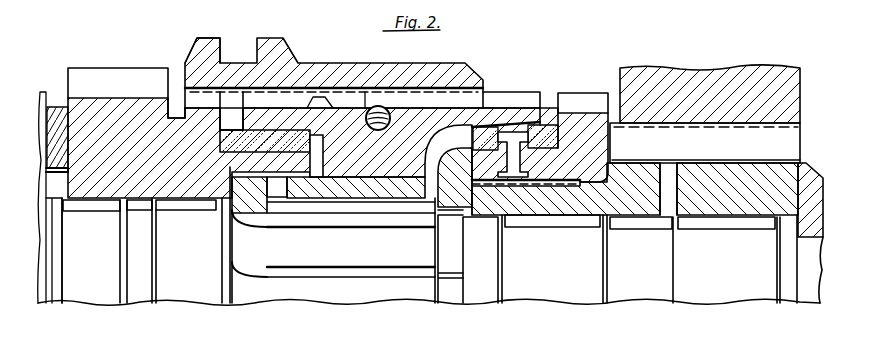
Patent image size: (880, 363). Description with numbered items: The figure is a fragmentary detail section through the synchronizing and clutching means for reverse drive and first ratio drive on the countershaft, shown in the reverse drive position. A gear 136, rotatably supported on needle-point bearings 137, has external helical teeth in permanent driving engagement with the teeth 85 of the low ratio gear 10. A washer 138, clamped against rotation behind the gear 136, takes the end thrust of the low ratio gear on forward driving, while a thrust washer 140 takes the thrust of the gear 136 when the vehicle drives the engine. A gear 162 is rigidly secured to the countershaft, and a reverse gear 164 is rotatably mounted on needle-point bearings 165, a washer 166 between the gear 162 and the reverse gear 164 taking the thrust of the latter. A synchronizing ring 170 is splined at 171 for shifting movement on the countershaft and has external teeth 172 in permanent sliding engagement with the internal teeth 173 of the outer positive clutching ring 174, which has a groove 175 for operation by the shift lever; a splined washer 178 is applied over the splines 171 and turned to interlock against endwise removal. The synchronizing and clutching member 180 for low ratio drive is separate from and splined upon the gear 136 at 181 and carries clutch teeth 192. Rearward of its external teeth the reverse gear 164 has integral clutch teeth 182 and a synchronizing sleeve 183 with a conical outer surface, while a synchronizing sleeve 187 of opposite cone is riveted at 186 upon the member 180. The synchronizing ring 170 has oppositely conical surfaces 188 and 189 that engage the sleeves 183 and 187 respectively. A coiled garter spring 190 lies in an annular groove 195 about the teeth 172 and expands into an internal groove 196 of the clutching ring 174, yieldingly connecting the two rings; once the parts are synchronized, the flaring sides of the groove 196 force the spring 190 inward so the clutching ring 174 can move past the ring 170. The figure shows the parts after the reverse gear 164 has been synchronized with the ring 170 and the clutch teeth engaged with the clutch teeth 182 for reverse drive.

The low ratio gear 10 is at (661, 76).
The teeth 85 is at (700, 140).
The gear 136 is at (742, 204).
The needle-point bearings 137 is at (692, 233).
The washer 138 is at (810, 229).
The thrust washer 140 is at (453, 207).
The gear 162 is at (41, 298).
The reverse gear 164 is at (108, 187).
The needle-point bearings 165 is at (165, 235).
The washer 166 is at (60, 106).
The synchronizing ring 170 is at (347, 183).
The splines 171 is at (405, 202).
The external teeth 172 is at (443, 100).
The internal teeth 173 is at (491, 97).
The outer positive clutching ring 174 is at (336, 67).
The groove 175 is at (226, 44).
The splined washer 178 is at (250, 204).
The synchronizing and clutching member 180 is at (597, 140).
The splines 181 is at (548, 186).
The clutch teeth 182 is at (186, 107).
The synchronizing sleeve 183 is at (230, 128).
The rivets 186 is at (498, 131).
The synchronizing sleeve 187 is at (547, 126).
The conical surface 188 is at (265, 130).
The conical surface 189 is at (510, 150).
The coiled garter spring 190 is at (385, 108).
The clutch teeth 192 is at (577, 97).
The annular groove 195 is at (377, 137).
The internal groove 196 is at (310, 100).